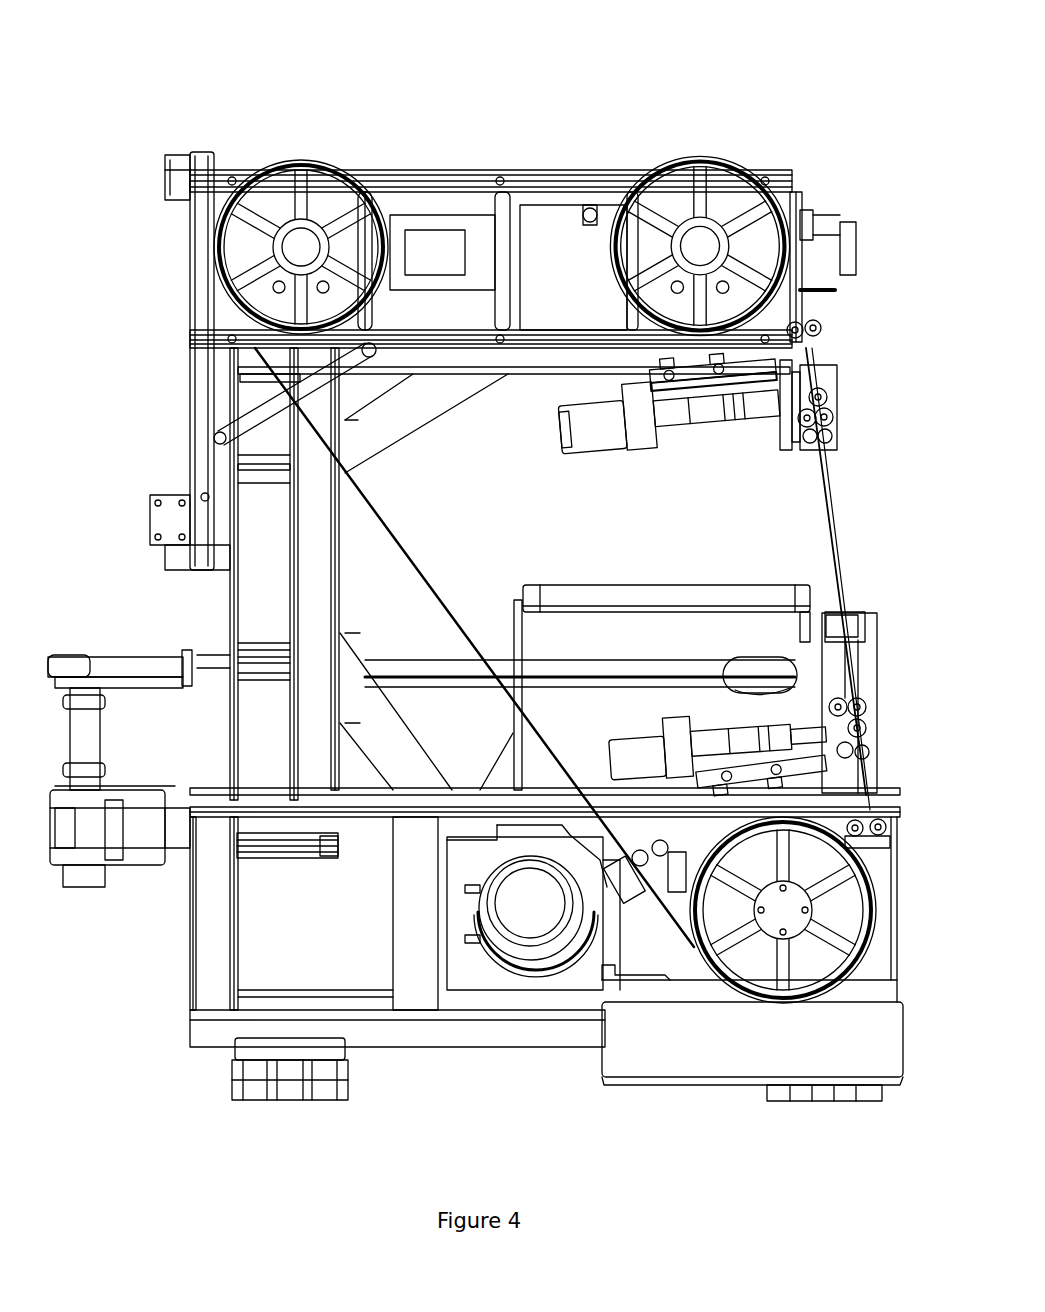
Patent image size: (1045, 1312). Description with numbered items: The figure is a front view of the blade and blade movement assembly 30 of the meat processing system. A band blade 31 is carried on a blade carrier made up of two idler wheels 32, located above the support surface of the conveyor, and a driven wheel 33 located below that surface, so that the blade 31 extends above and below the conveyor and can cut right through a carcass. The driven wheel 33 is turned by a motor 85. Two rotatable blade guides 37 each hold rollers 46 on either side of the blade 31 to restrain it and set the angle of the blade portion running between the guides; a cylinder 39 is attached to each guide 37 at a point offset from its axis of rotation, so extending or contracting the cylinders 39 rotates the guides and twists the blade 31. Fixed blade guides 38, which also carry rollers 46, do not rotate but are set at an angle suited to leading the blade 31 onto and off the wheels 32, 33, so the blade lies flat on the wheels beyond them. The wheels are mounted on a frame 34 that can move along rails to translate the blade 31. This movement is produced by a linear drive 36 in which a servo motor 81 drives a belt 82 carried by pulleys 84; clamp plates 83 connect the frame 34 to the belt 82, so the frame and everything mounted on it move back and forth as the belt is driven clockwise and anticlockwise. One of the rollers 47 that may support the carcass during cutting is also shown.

The blade movement assembly 30 is at (730, 72).
The blade 31 is at (700, 745).
The idler wheels 32 is at (290, 157).
The driven wheel 33 is at (885, 925).
The frame 34 is at (205, 440).
The linear drive 36 is at (112, 895).
The rotatable blade guides 37 is at (826, 372).
The fixed blade guides 38 is at (830, 320).
The cylinders 39 is at (745, 468).
The rollers 46 is at (832, 407).
The roller 47 is at (780, 590).
The servo motor 81 is at (265, 870).
The belt 82 is at (155, 660).
The clamp plates 83 is at (185, 640).
The pulleys 84 is at (835, 645).
The motor 85 is at (520, 912).